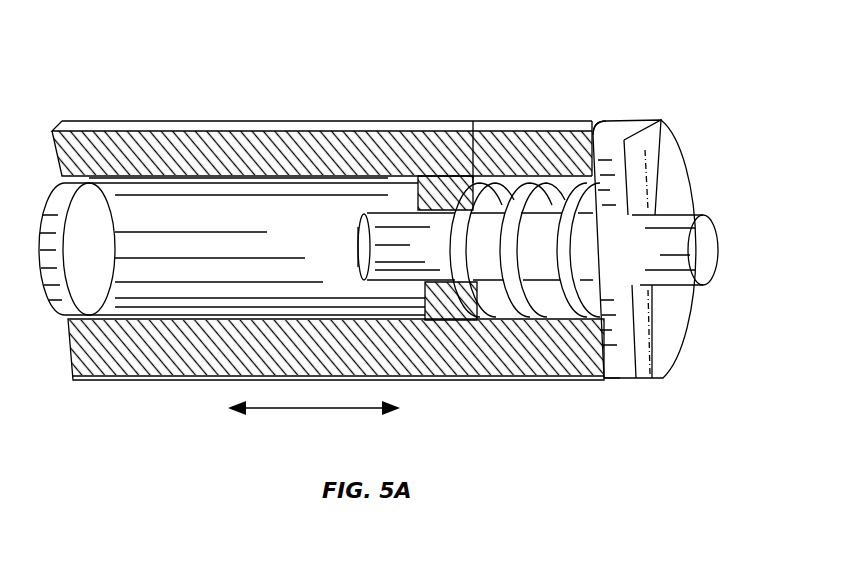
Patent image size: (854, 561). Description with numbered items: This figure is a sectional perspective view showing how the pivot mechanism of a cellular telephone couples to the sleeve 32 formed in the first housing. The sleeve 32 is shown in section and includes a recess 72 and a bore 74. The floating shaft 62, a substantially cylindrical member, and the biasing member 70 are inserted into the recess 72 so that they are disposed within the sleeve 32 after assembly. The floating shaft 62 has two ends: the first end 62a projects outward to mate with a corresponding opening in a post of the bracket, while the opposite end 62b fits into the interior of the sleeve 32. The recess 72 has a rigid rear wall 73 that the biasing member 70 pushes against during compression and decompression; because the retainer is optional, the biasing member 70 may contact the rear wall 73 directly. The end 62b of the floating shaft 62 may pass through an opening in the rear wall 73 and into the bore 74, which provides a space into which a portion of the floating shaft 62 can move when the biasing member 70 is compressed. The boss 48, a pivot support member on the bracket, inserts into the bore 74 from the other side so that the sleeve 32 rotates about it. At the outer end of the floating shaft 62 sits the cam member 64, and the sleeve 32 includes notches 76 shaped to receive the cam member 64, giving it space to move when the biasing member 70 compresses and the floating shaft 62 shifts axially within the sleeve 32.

The sleeve 32 is at (160, 121).
The boss 48 is at (55, 225).
The bore 74 is at (293, 207).
The floating shaft 62 is at (402, 253).
The first end of floating shaft 62a is at (677, 238).
The second end of floating shaft 62b is at (352, 247).
The biasing member 70 is at (505, 185).
The recess 72 is at (547, 195).
The rear wall 73 is at (473, 121).
The notches 76 is at (595, 128).
The cam member 64 is at (618, 127).